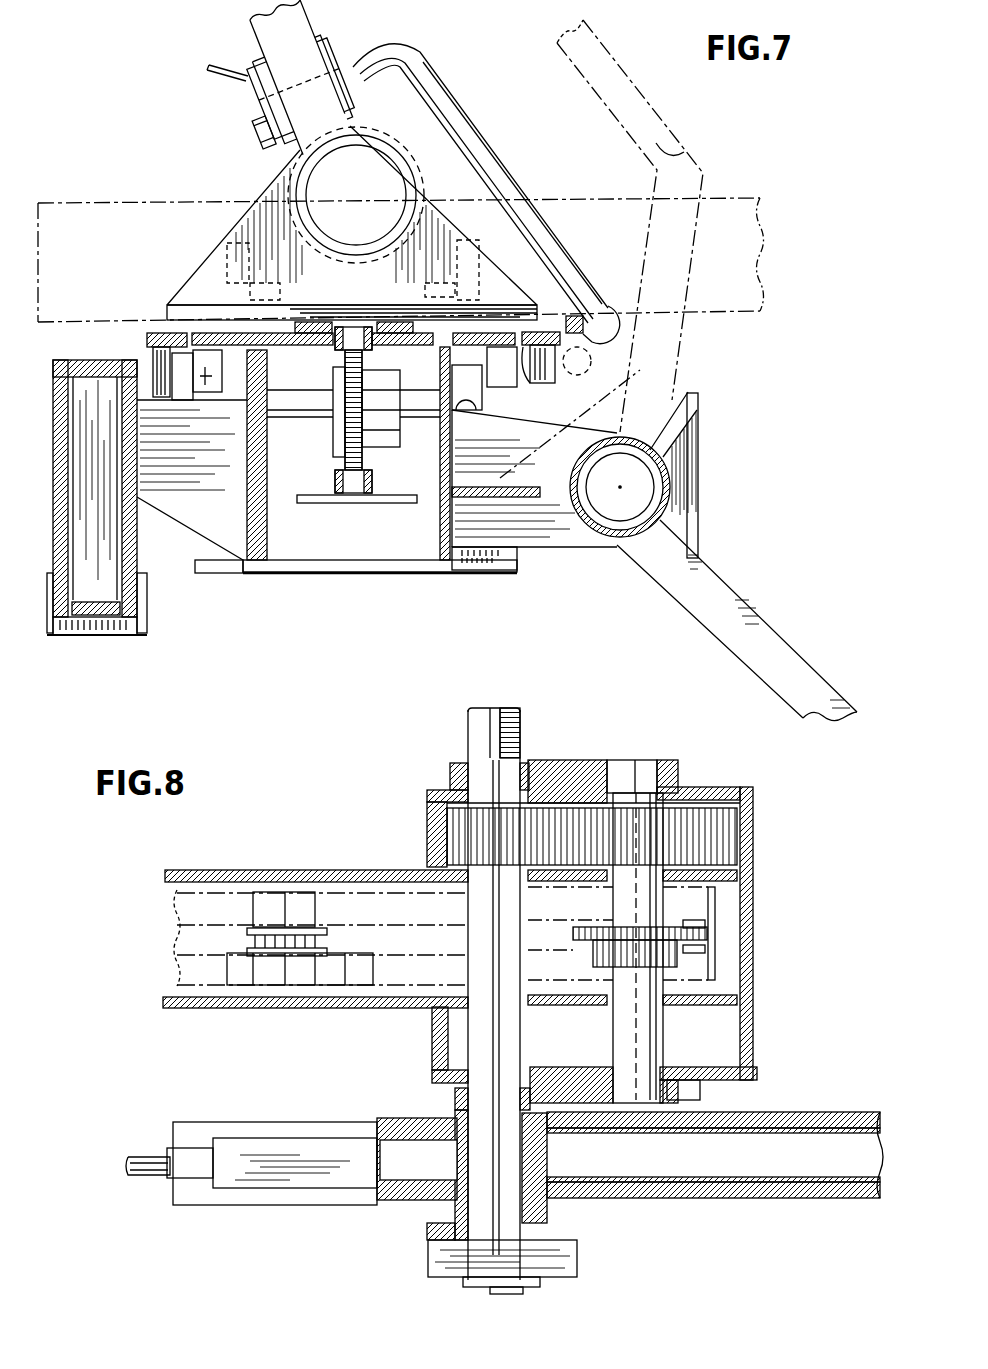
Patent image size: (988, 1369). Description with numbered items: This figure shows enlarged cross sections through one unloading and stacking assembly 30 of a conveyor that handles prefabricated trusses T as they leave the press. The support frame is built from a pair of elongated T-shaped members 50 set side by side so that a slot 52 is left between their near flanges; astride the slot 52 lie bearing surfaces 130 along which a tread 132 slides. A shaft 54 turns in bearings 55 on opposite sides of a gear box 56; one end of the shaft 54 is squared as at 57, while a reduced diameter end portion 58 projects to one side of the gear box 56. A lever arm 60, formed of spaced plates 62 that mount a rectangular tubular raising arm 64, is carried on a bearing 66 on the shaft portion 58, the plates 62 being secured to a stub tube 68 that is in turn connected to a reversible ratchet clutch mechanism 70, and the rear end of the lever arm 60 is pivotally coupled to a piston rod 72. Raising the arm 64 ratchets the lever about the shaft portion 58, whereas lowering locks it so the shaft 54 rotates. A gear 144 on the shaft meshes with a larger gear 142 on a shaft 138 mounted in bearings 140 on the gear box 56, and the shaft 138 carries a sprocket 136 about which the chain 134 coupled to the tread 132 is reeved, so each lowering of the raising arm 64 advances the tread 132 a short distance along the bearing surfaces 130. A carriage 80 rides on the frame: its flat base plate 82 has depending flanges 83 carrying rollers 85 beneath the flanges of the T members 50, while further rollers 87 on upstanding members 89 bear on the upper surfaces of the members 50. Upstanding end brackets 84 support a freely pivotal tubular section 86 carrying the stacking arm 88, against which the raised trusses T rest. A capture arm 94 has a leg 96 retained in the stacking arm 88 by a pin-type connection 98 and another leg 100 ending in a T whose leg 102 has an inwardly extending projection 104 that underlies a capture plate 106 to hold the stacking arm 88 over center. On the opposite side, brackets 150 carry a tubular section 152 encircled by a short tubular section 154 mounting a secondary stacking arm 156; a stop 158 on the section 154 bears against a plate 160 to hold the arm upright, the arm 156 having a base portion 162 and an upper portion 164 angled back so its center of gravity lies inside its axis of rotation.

In FIG. 7, the unloading and stacking assembly 30 is at (356, 490).
In FIG. 7, the T-shaped members 50 is at (273, 507).
In FIG. 7, the slot 52 is at (356, 330).
In FIG. 8, the shaft 54 is at (483, 770).
In FIG. 8, the bearings 55 is at (450, 770).
In FIG. 8, the gear box 56 is at (428, 793).
In FIG. 8, the squared end 57 is at (475, 723).
In FIG. 8, the reduced diameter end portion 58 is at (493, 1200).
In FIG. 8, the lever arm 60 is at (715, 1171).
In FIG. 8, the plates 62 is at (653, 1187).
In FIG. 8, the raising arm 64 is at (773, 1175).
In FIG. 8, the bearing 66 is at (490, 1143).
In FIG. 8, the stub tube 68 is at (547, 1155).
In FIG. 8, the reversible ratchet clutch mechanism 70 is at (440, 1257).
In FIG. 8, the piston rod 72 is at (142, 1155).
In FIG. 7, the carriage 80 is at (232, 177).
In FIG. 7, the base plate 82 is at (325, 306).
In FIG. 7, the flanges 83 is at (170, 393).
In FIG. 7, the end brackets 84 is at (190, 283).
In FIG. 7, the rollers 85 is at (208, 393).
In FIG. 7, the tubular section 86 is at (314, 170).
In FIG. 7, the rollers 87 is at (440, 283).
In FIG. 7, the stacking arm 88 is at (255, 33).
In FIG. 7, the members 89 is at (477, 297).
In FIG. 7, the capture arm 94 is at (480, 183).
In FIG. 7, the leg 96 is at (357, 70).
In FIG. 7, the pin-type connection 98 is at (246, 90).
In FIG. 7, the leg 100 is at (500, 163).
In FIG. 7, the leg 102 is at (599, 361).
In FIG. 7, the projections 104 is at (572, 312).
In FIG. 7, the capture plates 106 is at (157, 330).
In FIG. 7, the bearing surfaces 130 is at (397, 347).
In FIG. 7, the tread 132 is at (395, 503).
In FIG. 8, the tread 132 is at (297, 900).
In FIG. 7, the chain 134 is at (370, 460).
In FIG. 8, the sprocket 136 is at (672, 928).
In FIG. 8, the shaft 138 is at (663, 1013).
In FIG. 8, the bearings 140 is at (680, 1090).
In FIG. 8, the gear 142 is at (587, 820).
In FIG. 8, the gear 144 is at (453, 838).
In FIG. 7, the brackets 150 is at (555, 527).
In FIG. 7, the tubular section 152 is at (660, 486).
In FIG. 7, the short tubular section 154 is at (632, 443).
In FIG. 7, the secondary stacking arm 156 is at (677, 363).
In FIG. 7, the stop 158 is at (681, 418).
In FIG. 7, the plate 160 is at (493, 487).
In FIG. 7, the base portion 162 is at (690, 243).
In FIG. 7, the upper portion 164 is at (693, 154).
In FIG. 7, the trusses T is at (600, 198).